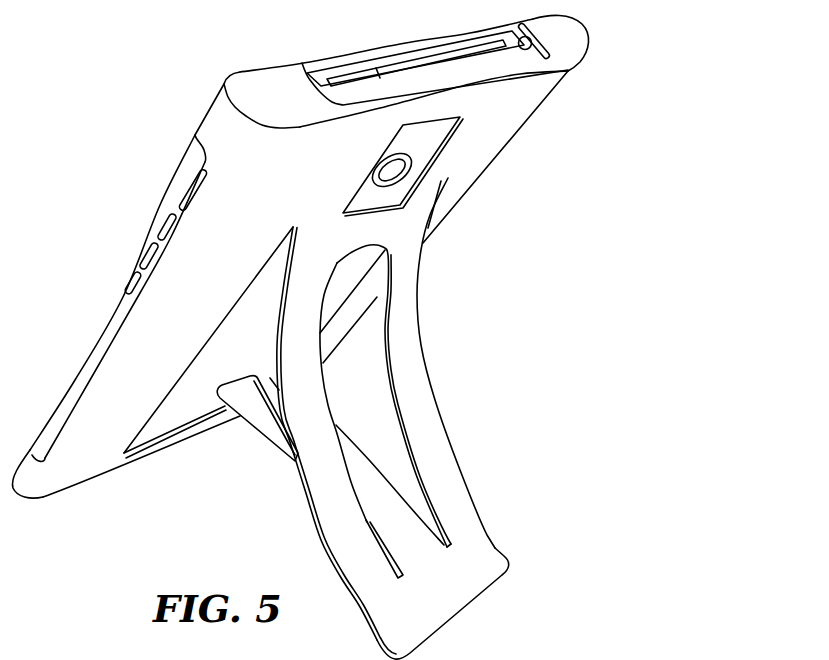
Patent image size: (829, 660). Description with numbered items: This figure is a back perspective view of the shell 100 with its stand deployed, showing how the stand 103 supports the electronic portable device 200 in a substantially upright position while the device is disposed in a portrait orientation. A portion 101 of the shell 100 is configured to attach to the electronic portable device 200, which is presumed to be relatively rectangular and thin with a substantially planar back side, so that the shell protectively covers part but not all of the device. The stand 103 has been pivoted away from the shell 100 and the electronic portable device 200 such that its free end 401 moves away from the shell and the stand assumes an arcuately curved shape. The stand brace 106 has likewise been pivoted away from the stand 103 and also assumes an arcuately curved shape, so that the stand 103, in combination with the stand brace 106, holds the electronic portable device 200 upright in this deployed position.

The shell 100 is at (300, 337).
The portion of the shell 101 is at (178, 322).
The stand 103 is at (413, 392).
The stand brace 106 is at (255, 393).
The electronic portable device 200 is at (340, 277).
The free end of the stand 401 is at (457, 617).